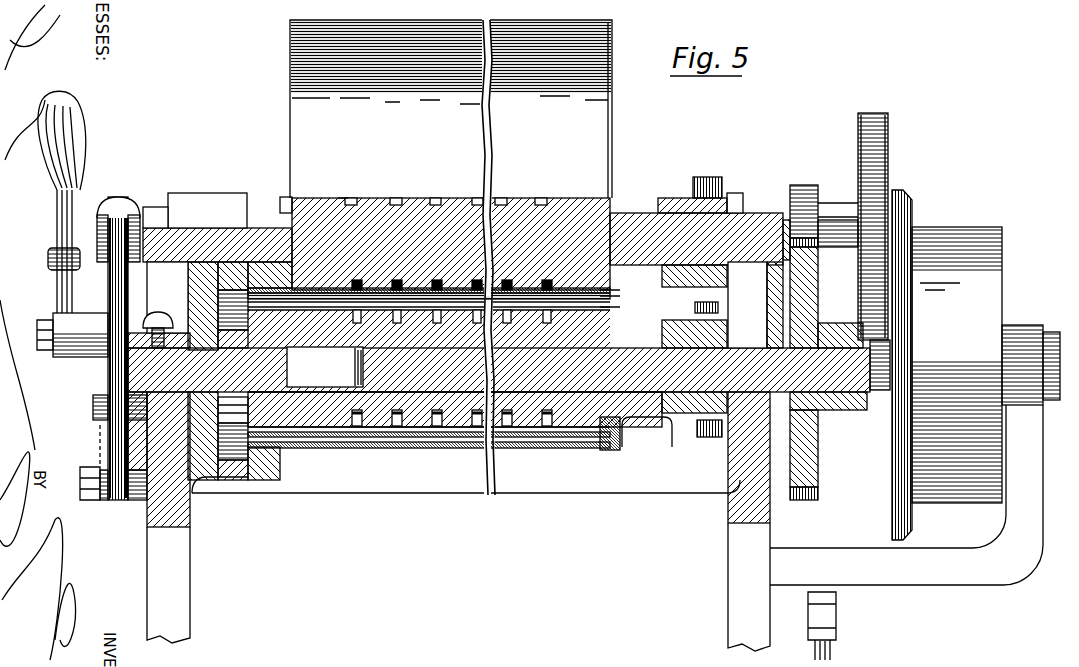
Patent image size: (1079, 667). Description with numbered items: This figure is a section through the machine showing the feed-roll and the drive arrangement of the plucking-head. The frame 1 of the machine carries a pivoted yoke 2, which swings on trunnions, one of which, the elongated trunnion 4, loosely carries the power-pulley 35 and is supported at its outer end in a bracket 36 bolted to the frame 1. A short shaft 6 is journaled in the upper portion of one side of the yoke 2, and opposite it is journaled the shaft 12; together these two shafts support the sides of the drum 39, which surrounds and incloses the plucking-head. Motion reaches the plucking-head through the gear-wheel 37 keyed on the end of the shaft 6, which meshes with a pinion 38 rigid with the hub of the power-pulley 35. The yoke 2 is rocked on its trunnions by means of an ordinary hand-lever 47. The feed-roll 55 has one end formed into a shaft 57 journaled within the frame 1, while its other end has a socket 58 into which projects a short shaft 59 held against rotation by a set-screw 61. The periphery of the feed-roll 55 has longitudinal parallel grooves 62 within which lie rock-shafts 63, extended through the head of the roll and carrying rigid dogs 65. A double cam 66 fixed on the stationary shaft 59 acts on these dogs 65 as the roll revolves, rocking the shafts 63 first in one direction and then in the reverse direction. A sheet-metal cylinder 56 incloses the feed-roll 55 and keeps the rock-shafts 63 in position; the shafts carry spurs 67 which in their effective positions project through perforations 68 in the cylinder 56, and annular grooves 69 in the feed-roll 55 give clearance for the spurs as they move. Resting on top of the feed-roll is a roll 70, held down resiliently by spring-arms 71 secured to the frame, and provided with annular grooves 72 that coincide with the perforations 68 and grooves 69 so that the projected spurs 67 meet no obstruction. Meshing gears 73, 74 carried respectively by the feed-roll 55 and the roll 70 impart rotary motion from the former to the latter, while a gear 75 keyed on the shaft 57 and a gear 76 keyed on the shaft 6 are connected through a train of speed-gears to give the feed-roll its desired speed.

The frame 1 is at (182, 566).
The yoke 2 is at (407, 486).
The trunnion 4 is at (1006, 345).
The short shaft 6 is at (830, 212).
The shaft 12 is at (84, 215).
The power-pulley 35 is at (947, 365).
The bracket 36 is at (1007, 550).
The gear-wheel 37 is at (890, 152).
The pinion 38 is at (878, 392).
The drum 39 is at (305, 70).
The hand-lever 47 is at (58, 207).
The feed-roll 55 is at (623, 320).
The sheet-metal cylinder 56 is at (620, 296).
The shaft 57 is at (828, 382).
The socket 58 is at (357, 412).
The short shaft 59 is at (137, 360).
The set-screw 61 is at (155, 320).
The longitudinal parallel grooves 62 is at (632, 303).
The rock-shafts 63 is at (316, 300).
The dogs 65 is at (236, 500).
The double cam 66 is at (217, 475).
The spurs 67 is at (357, 283).
The perforations 68 is at (402, 292).
The annular grooves 69 is at (348, 310).
The roll 70 is at (342, 198).
The spring-arms 71 is at (167, 230).
The annular grooves 72 is at (360, 197).
The gear 73 is at (707, 437).
The gear 74 is at (700, 185).
The gear 75 is at (820, 494).
The gear 76 is at (802, 205).